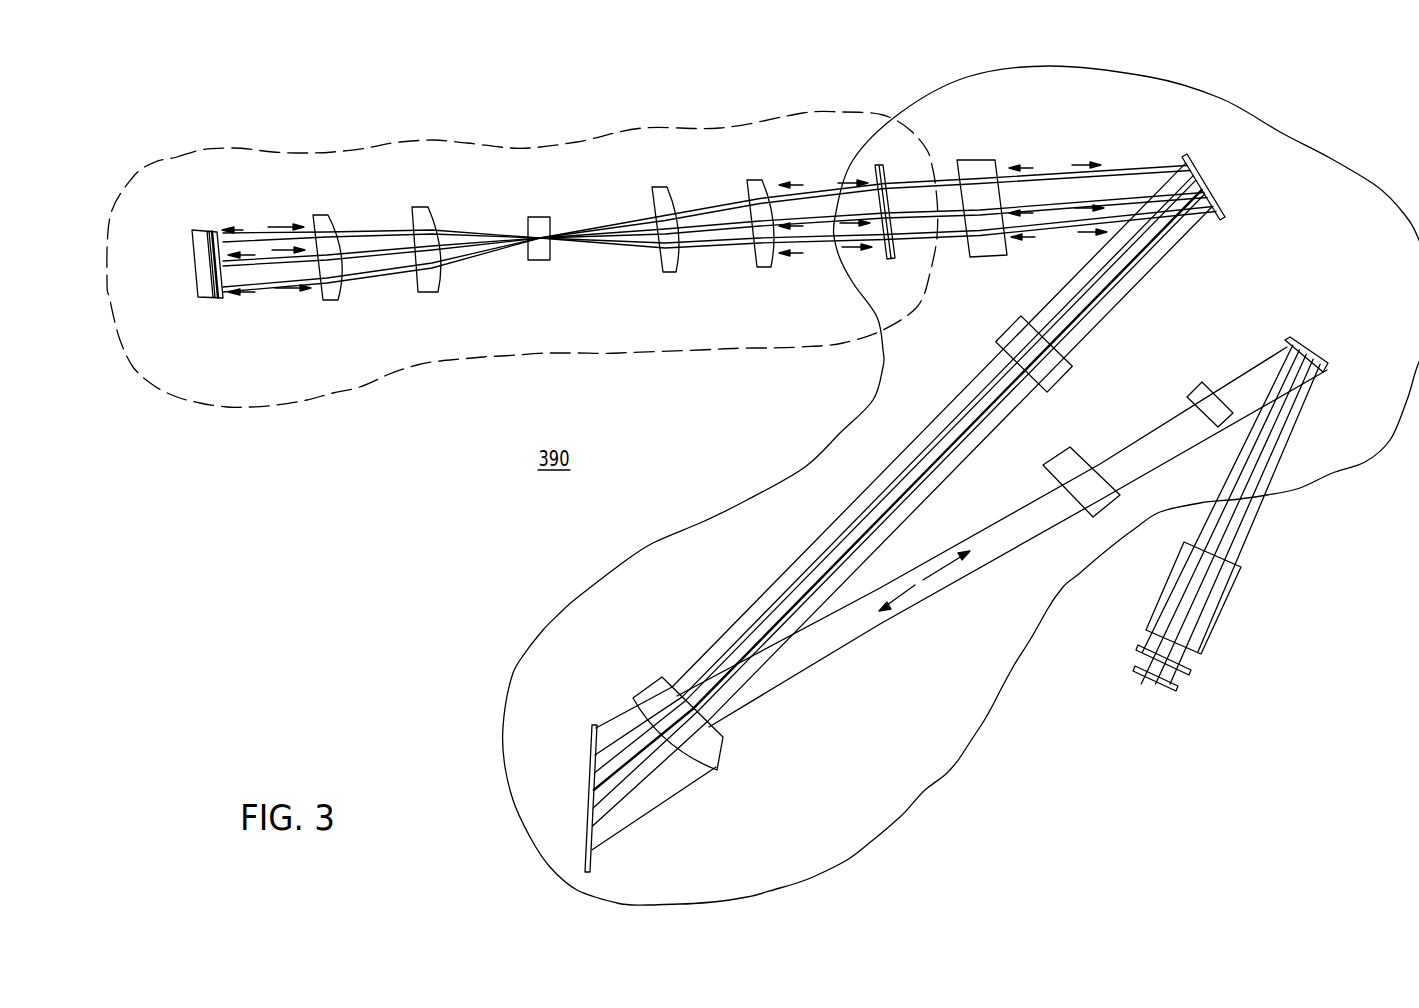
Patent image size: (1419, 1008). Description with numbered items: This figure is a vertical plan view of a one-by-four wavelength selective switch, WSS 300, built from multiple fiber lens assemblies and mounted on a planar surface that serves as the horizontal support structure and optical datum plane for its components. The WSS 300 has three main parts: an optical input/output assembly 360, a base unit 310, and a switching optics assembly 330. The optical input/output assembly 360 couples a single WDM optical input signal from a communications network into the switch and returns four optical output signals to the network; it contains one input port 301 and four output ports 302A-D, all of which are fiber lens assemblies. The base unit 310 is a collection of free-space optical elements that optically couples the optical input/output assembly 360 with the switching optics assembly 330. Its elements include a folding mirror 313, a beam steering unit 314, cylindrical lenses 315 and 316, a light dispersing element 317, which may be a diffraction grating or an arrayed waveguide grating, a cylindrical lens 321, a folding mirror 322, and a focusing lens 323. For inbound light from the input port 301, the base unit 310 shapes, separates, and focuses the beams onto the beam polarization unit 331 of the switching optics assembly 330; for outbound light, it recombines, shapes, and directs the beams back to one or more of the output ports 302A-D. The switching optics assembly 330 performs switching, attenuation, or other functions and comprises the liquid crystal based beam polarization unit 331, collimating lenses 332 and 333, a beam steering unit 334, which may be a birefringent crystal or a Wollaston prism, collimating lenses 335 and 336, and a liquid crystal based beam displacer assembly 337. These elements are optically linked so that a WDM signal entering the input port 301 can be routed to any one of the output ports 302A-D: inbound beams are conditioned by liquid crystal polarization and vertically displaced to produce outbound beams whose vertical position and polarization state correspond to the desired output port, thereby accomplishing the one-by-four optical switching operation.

The WSS 300 is at (280, 104).
The base unit 310 is at (1283, 131).
The folding mirror 313 is at (1306, 338).
The beam steering unit 314 is at (1190, 393).
The cylindrical lens 315 is at (1055, 458).
The cylindrical lens 316 is at (738, 745).
The light dispersing element 317 is at (595, 858).
The cylindrical lens 321 is at (1010, 330).
The folding mirror 322 is at (1192, 160).
The focusing lens 323 is at (968, 160).
The switching optics assembly 330 is at (397, 370).
The beam polarization unit 331 is at (879, 164).
The collimating lens 332 is at (758, 180).
The collimating lens 333 is at (658, 187).
The beam steering unit 334 is at (538, 217).
The collimating lens 335 is at (420, 207).
The collimating lens 336 is at (316, 213).
The beam displacer assembly 337 is at (202, 224).
The input port 301 is at (1150, 607).
The output ports 302A-D is at (1227, 613).
The optical input/output assembly 360 is at (1216, 691).